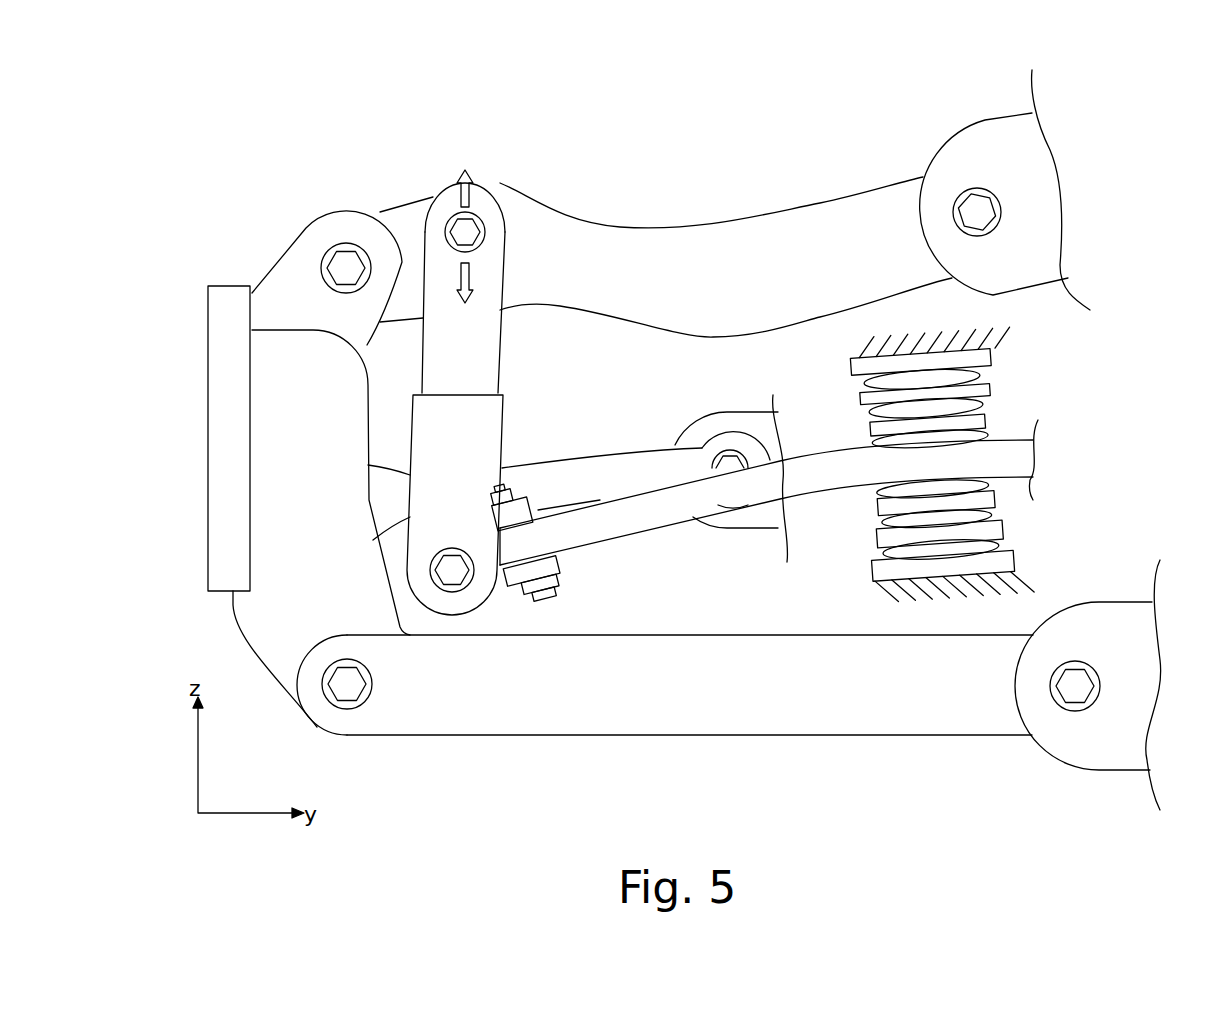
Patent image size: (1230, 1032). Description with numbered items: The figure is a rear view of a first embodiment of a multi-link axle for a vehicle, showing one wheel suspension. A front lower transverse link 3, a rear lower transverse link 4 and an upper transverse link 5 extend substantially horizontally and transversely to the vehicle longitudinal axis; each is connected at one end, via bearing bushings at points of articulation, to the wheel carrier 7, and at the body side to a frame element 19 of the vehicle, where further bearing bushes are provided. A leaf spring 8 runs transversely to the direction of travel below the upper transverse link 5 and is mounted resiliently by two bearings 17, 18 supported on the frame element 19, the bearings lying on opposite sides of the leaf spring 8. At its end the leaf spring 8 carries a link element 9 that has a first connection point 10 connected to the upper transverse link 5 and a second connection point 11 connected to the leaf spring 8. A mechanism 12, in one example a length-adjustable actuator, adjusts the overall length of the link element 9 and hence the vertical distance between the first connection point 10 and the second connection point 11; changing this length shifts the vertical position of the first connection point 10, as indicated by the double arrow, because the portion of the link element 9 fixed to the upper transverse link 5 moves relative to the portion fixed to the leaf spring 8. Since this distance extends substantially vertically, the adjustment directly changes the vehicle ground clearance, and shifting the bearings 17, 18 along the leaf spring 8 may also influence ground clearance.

The front lower transverse link 3 is at (618, 468).
The rear lower transverse link 4 is at (718, 715).
The upper transverse link 5 is at (713, 245).
The wheel carrier 7 is at (273, 417).
The leaf spring 8 is at (820, 480).
The link element 9 is at (487, 402).
The first connection point 10 is at (460, 227).
The second connection point 11 is at (543, 562).
The mechanism 12 is at (478, 327).
The bearing 17 is at (990, 392).
The bearing 18 is at (990, 530).
The frame element 19 is at (1013, 127).